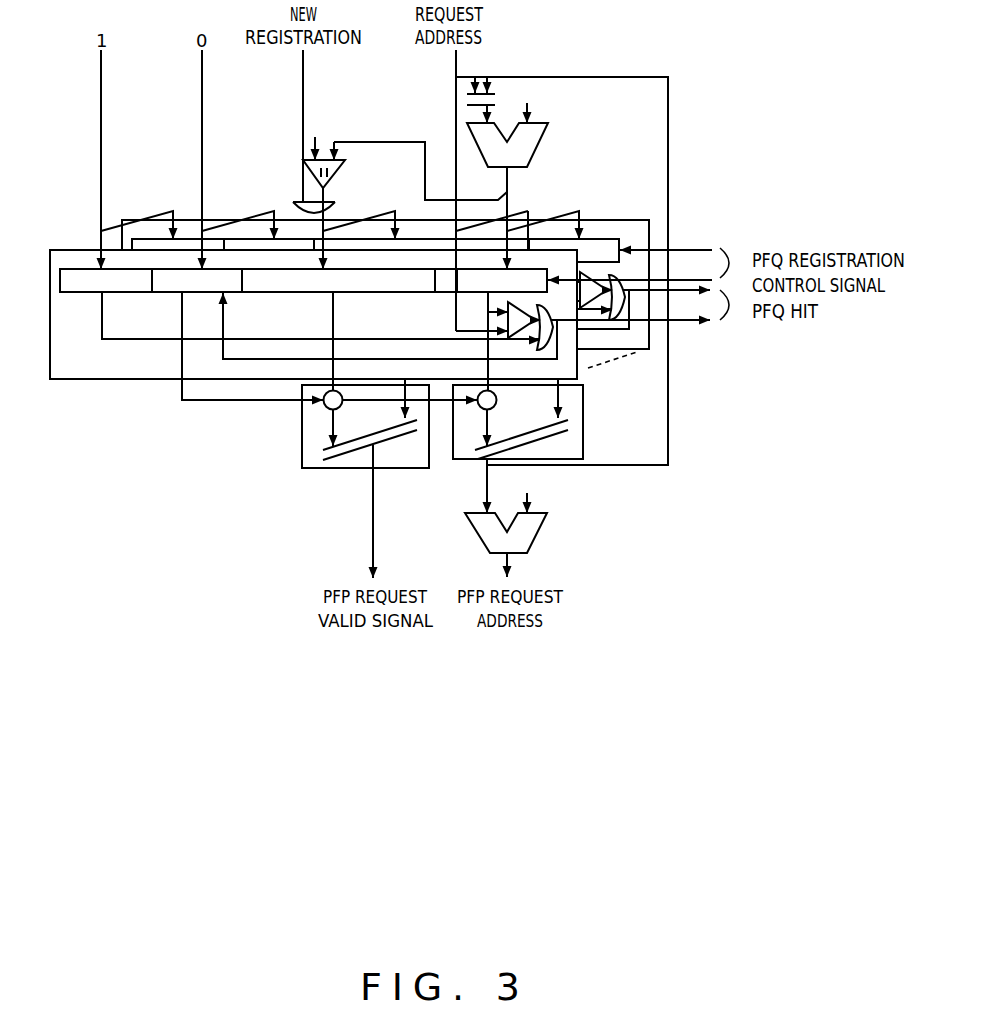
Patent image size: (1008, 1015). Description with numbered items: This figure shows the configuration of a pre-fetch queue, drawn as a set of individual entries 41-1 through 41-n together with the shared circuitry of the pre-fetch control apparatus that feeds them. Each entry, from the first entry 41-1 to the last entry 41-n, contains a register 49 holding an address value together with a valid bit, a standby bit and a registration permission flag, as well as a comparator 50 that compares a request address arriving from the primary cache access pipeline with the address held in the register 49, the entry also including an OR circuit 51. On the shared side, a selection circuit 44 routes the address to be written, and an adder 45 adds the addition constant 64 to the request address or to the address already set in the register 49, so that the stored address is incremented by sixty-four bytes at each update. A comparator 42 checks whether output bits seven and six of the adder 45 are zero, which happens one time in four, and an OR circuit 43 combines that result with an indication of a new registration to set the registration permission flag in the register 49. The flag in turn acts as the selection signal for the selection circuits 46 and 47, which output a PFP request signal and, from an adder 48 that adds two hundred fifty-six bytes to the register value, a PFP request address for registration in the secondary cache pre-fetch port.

The entry 41-1 is at (52, 250).
The entry 41-n is at (123, 219).
The comparator 42 is at (345, 161).
The OR circuit 43 is at (335, 203).
The selection circuit 44 is at (490, 94).
The adder 45 is at (537, 150).
The selection circuit 46 is at (407, 469).
The selection circuit 47 is at (583, 426).
The adder 48 is at (533, 540).
The register 49 is at (513, 268).
The comparator 50 is at (524, 306).
The OR circuit 51 is at (548, 314).
The addition constant 64 is at (530, 104).